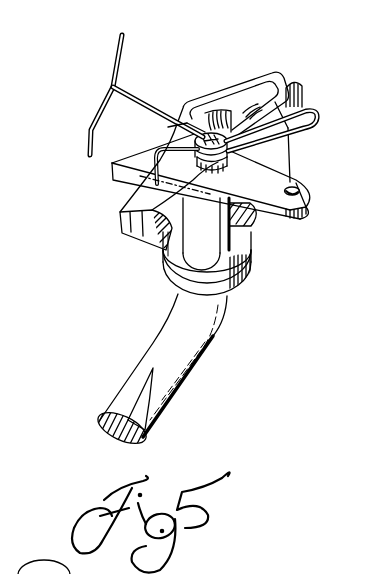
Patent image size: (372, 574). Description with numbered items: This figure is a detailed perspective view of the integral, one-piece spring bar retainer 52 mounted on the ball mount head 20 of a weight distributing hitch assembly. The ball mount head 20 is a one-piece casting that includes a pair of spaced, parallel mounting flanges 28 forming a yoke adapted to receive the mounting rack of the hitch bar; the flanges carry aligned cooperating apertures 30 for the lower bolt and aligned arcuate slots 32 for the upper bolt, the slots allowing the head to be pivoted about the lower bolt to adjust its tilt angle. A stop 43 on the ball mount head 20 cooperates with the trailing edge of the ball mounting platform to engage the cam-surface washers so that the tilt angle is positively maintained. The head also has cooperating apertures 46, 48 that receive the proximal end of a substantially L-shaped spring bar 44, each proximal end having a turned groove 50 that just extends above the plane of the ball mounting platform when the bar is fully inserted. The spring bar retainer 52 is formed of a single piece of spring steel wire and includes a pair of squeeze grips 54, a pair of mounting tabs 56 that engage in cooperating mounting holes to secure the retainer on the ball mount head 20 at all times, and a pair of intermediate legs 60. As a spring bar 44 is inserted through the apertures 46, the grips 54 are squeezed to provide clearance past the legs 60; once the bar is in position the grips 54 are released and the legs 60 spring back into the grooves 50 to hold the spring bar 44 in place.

The ball mount head 20 is at (305, 220).
The mounting flanges 28 is at (282, 156).
The cooperating apertures 30 is at (263, 228).
The arcuate slots 32 is at (275, 80).
The stop 43 is at (305, 93).
The spring bars 44 is at (210, 349).
The cooperating aperture 46 is at (163, 273).
The cooperating aperture 48 is at (294, 175).
The turned groove 50 is at (160, 231).
The spring bar retainer 52 is at (137, 101).
The squeeze grips 54 is at (127, 49).
The mounting tabs 56 is at (136, 190).
The intermediate legs 60 is at (122, 215).